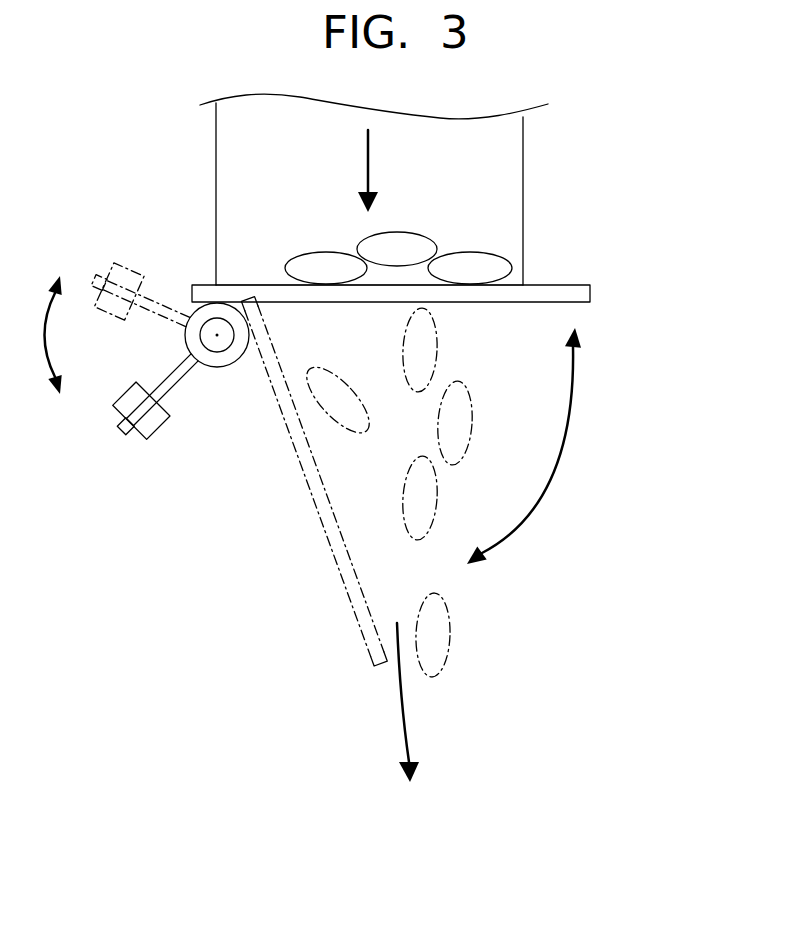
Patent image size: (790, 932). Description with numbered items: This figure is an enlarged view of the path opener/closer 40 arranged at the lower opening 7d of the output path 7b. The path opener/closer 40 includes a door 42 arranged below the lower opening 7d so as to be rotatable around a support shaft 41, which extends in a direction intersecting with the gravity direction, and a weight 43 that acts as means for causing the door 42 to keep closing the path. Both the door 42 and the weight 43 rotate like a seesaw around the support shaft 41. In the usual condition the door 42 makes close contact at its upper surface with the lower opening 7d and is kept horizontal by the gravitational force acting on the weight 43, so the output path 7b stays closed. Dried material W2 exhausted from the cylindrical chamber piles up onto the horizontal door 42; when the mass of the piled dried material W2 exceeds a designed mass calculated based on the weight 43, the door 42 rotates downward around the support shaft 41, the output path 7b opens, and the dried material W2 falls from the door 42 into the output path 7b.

The output path 7b is at (204, 133).
The lower opening 7d is at (524, 285).
The path opener/closer 40 is at (376, 435).
The support shaft 41 is at (204, 337).
The door 42 is at (583, 295).
The weight 43 is at (116, 263).
The dried material W2 is at (318, 265).